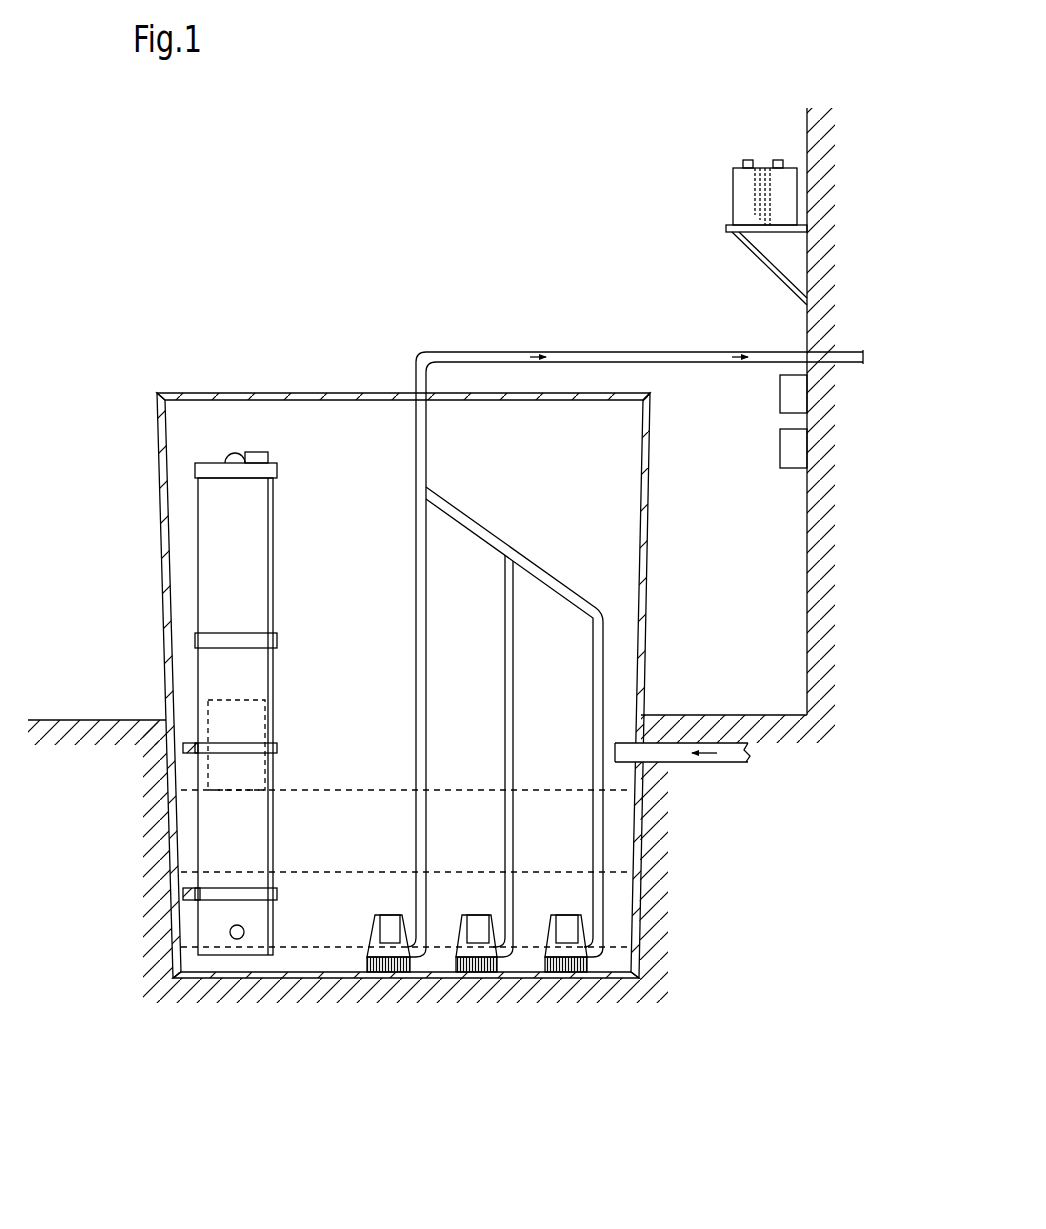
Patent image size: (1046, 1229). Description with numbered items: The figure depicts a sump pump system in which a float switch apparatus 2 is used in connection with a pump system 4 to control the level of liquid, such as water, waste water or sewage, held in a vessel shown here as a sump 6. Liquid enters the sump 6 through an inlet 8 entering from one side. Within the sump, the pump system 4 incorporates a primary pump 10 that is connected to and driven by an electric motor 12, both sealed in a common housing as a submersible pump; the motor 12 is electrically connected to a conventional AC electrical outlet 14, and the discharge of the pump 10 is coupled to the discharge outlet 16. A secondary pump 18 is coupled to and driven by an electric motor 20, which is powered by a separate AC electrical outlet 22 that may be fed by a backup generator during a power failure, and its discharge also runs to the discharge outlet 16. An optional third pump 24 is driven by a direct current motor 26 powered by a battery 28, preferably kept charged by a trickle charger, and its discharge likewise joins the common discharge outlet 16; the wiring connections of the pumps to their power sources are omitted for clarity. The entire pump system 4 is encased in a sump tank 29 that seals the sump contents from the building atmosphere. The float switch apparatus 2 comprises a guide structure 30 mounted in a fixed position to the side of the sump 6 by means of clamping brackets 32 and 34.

The float switch apparatus 2 is at (188, 545).
The pump system 4 is at (260, 356).
The sump 6 is at (342, 843).
The inlet 8 is at (736, 760).
The primary pump 10 is at (580, 948).
The electric motor 12 is at (578, 921).
The AC electrical outlet 14 is at (780, 452).
The discharge outlet 16 is at (848, 363).
The secondary pump 18 is at (482, 952).
The electric motor 20 is at (477, 923).
The AC electrical outlet 22 is at (780, 398).
The third pump 24 is at (368, 955).
The direct current motor 26 is at (372, 932).
The battery 28 is at (735, 190).
The sump tank 29 is at (157, 422).
The guide structure 30 is at (210, 595).
The clamping bracket 32 is at (200, 758).
The clamping bracket 34 is at (200, 903).